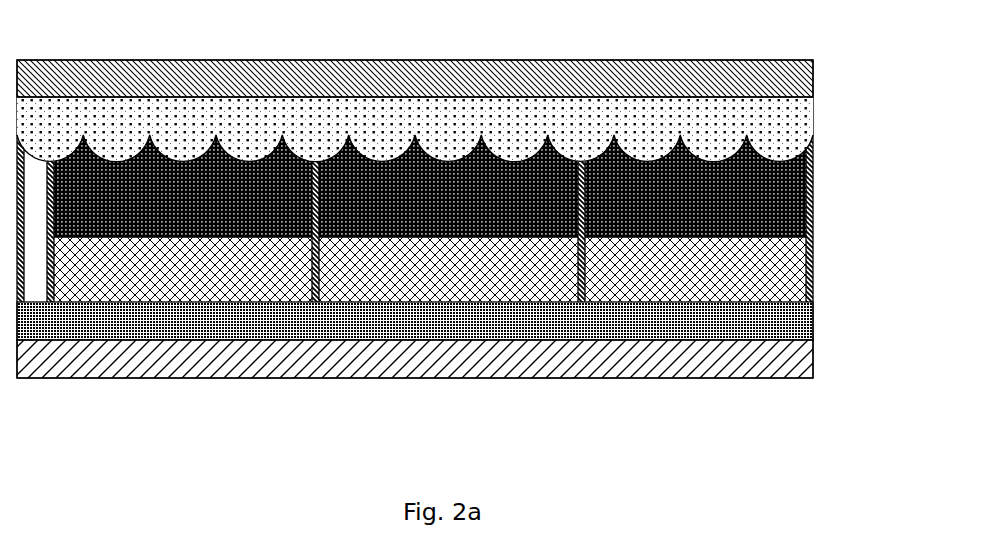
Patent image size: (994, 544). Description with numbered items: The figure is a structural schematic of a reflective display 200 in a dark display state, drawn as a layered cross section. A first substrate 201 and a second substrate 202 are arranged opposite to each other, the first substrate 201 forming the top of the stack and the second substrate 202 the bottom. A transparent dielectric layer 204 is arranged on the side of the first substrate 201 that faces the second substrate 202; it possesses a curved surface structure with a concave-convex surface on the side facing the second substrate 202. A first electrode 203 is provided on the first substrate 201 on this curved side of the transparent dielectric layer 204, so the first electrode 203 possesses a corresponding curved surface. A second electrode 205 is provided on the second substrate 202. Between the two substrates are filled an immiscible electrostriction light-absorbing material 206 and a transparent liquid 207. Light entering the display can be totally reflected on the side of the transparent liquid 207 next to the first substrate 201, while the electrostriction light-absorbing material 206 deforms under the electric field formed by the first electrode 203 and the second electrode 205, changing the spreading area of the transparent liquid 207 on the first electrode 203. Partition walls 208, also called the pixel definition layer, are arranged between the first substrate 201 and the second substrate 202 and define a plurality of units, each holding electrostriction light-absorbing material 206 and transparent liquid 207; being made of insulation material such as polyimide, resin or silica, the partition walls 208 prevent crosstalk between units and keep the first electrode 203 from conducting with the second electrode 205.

The reflective display 200 is at (462, 396).
The first substrate 201 is at (813, 60).
The second substrate 202 is at (813, 377).
The first electrode 203 is at (810, 150).
The transparent dielectric layer 204 is at (773, 123).
The second electrode 205 is at (780, 314).
The electrostriction light-absorbing material 206 is at (813, 185).
The transparent liquid 207 is at (777, 287).
The partition wall 208 is at (813, 248).